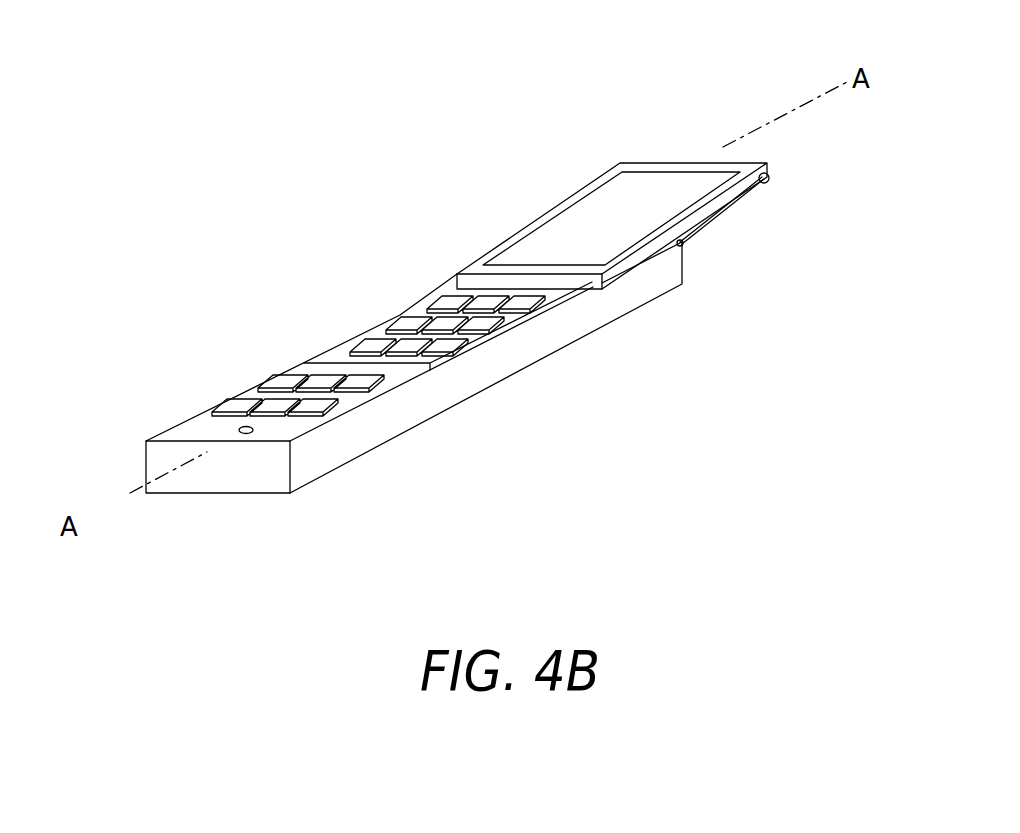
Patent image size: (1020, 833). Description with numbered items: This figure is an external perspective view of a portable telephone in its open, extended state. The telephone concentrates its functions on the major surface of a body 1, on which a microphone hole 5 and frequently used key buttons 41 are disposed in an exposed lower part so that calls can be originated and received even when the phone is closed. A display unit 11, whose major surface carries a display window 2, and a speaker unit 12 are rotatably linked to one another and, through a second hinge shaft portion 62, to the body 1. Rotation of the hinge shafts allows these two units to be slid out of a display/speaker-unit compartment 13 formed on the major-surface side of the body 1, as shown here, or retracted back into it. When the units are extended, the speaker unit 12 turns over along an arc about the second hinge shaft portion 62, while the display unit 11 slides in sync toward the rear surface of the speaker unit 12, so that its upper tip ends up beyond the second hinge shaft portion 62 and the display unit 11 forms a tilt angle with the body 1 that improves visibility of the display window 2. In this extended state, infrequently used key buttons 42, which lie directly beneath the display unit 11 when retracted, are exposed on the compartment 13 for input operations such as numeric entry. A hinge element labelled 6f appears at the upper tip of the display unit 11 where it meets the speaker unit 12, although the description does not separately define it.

The body 1 is at (513, 372).
The display window 2 is at (590, 222).
The microphone hole 5 is at (239, 430).
The hinge shaft 6f is at (770, 178).
The display unit 11 is at (510, 237).
The speaker unit 12 is at (723, 212).
The display/speaker-unit compartment 13 is at (467, 360).
The key buttons 41 is at (284, 373).
The key buttons 42 is at (453, 300).
The second hinge shaft portion 62 is at (684, 247).